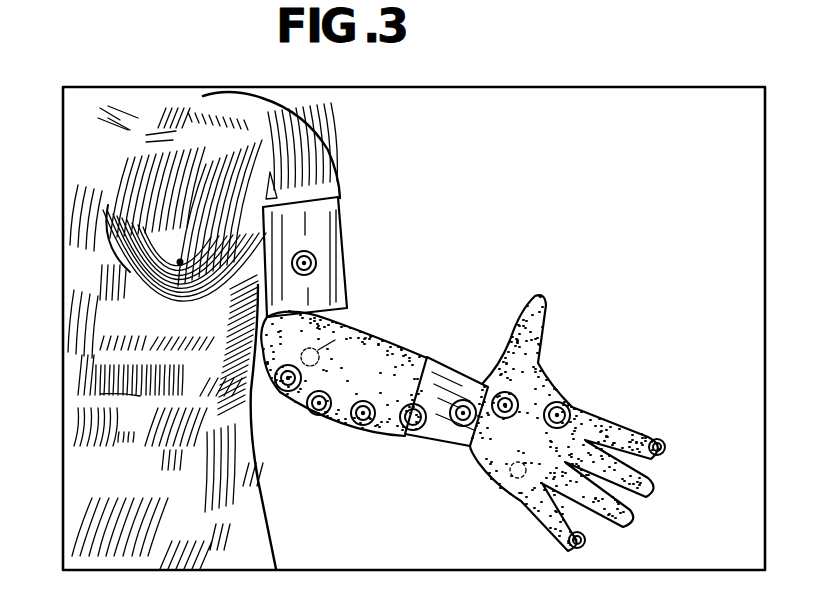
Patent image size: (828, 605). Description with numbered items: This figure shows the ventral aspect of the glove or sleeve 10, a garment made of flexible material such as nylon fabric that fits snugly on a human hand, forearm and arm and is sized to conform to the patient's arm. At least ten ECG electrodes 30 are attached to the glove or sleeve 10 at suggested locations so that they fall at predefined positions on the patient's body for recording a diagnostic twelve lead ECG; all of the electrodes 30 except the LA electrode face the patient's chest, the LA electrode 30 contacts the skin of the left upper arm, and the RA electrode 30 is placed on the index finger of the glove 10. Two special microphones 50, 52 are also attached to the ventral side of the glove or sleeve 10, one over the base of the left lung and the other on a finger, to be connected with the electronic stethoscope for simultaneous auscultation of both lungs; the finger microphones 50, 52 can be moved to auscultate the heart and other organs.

The ECG electrodes 30 is at (316, 257).
The glove or sleeve 10 is at (383, 342).
The microphone 50 is at (357, 327).
The microphone 52 is at (507, 497).